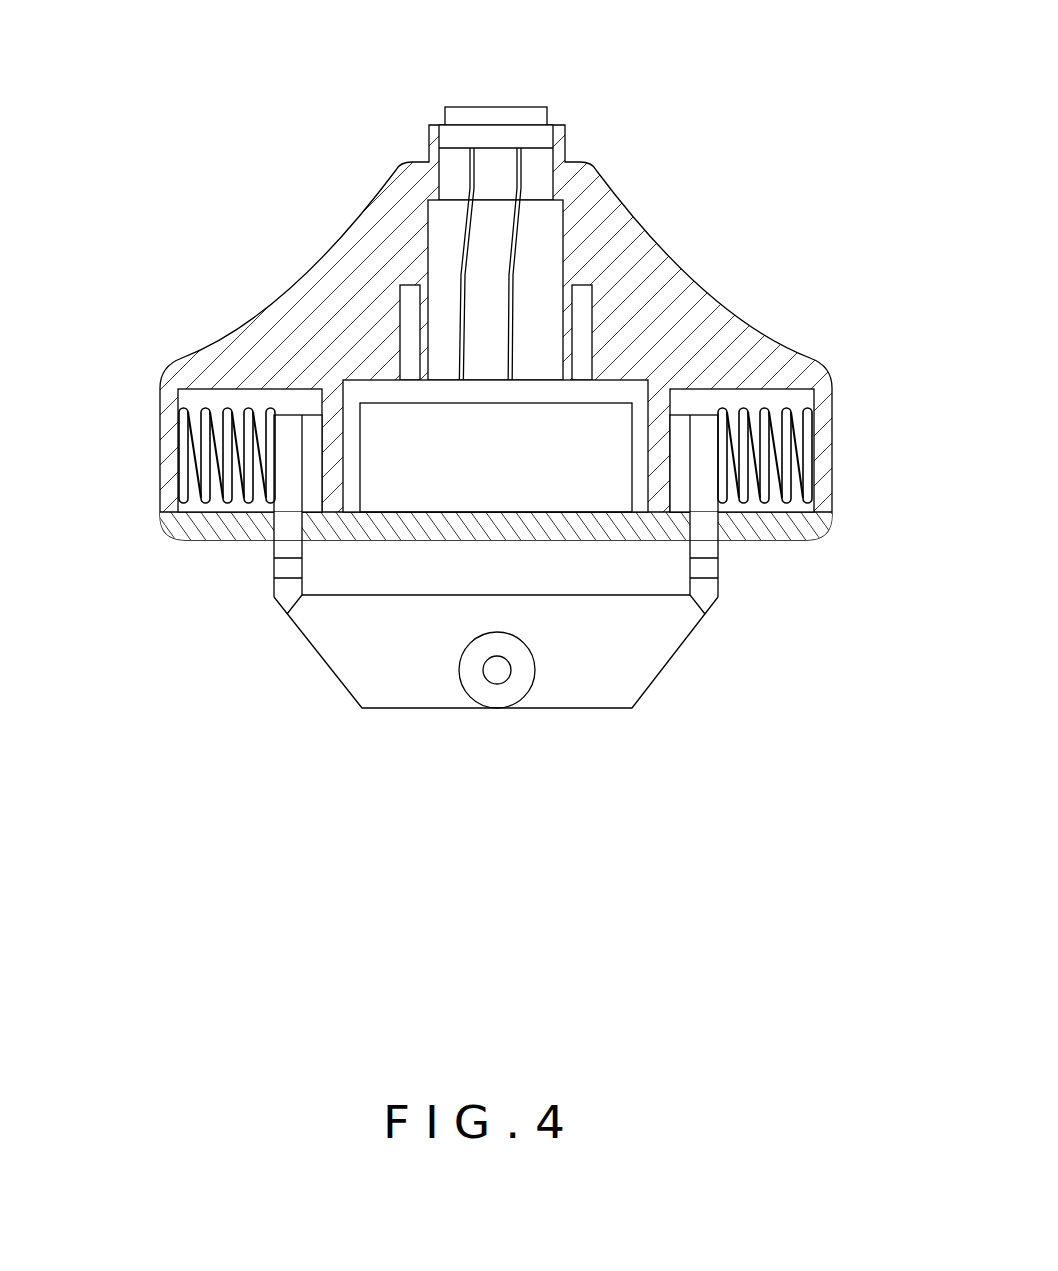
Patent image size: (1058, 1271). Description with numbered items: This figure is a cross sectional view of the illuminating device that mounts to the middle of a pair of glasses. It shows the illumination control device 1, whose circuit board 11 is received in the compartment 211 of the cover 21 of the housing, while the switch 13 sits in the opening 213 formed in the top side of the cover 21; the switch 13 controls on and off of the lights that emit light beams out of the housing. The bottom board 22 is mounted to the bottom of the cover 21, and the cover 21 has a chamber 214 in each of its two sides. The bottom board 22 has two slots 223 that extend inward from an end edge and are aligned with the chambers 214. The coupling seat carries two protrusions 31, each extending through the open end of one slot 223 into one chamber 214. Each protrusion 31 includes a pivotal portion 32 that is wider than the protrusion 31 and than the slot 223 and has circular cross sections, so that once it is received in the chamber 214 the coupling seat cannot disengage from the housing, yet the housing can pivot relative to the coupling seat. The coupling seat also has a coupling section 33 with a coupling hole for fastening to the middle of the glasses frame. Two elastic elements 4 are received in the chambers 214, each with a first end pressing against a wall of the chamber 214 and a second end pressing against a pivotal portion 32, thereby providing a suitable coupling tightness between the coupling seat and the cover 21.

The illumination control device 1 is at (547, 342).
The circuit board 11 is at (462, 490).
The switch 13 is at (513, 107).
The cover 21 is at (663, 253).
The compartment 211 is at (610, 388).
The opening 213 is at (537, 172).
The chamber 214 is at (218, 397).
The bottom board 22 is at (628, 525).
The slot 223 is at (268, 530).
The protrusion 31 is at (290, 533).
The pivotal portion 32 is at (292, 438).
The coupling section 33 is at (472, 668).
The elastic element 4 is at (228, 473).